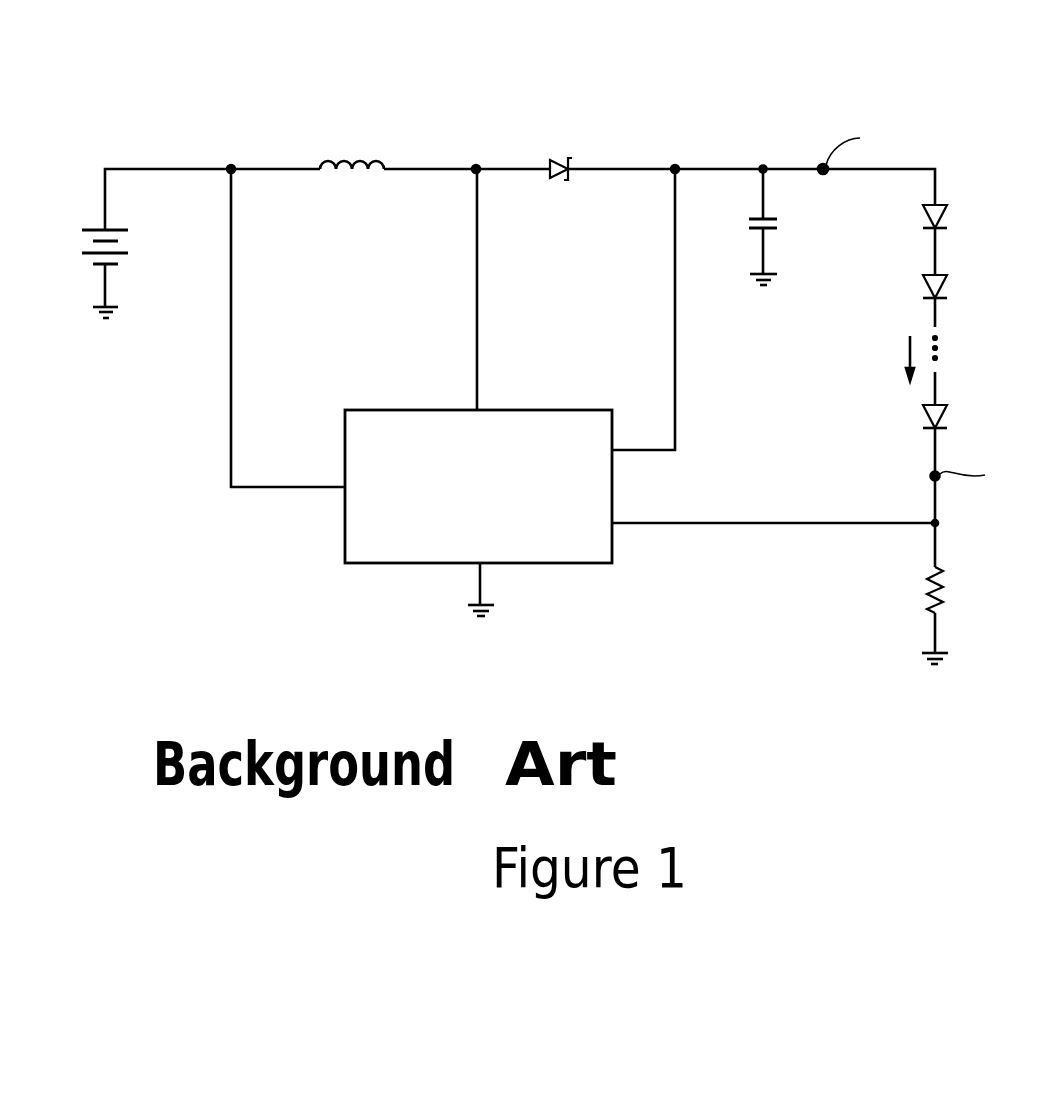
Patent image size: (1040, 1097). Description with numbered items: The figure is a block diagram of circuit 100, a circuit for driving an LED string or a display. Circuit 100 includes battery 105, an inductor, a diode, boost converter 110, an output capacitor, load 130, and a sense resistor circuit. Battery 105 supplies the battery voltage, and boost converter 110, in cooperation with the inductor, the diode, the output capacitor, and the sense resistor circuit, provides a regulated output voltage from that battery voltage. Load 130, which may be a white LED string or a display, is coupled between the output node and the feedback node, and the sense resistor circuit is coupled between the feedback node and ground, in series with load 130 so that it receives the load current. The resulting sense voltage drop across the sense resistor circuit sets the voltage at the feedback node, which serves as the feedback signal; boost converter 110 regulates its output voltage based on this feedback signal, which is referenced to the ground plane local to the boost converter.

The circuit 100 is at (512, 35).
The battery 105 is at (127, 229).
The boost converter 110 is at (500, 548).
The load 130 is at (952, 203).